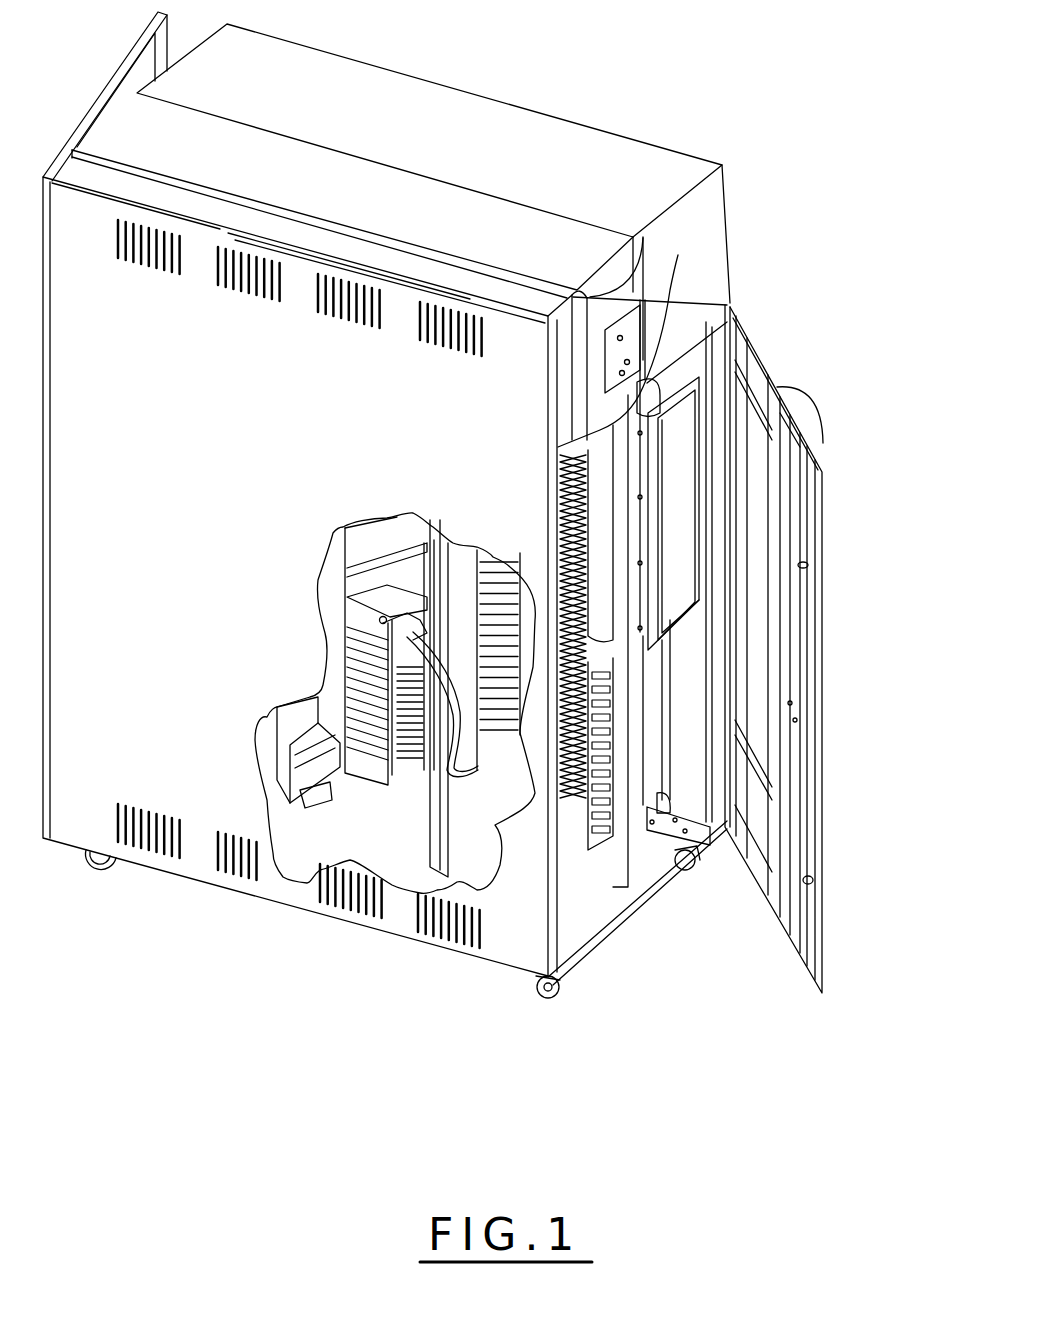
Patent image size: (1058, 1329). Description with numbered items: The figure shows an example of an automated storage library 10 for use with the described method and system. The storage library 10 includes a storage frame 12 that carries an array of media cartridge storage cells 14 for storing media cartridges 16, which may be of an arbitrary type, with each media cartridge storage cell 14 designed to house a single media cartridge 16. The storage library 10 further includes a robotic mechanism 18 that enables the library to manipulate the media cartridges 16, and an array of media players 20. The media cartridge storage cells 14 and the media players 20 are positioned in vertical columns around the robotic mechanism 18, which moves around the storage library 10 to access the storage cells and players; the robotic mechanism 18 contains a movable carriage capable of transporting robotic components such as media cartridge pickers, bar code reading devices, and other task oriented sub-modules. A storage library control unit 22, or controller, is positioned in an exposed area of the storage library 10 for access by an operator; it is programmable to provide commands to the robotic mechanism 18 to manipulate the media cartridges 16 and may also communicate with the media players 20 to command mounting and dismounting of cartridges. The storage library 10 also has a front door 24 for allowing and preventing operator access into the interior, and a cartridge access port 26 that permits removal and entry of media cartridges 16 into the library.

The automated storage library 10 is at (760, 85).
The storage frame 12 is at (367, 770).
The media cartridge storage cells 14 is at (353, 663).
The media cartridges 16 is at (380, 620).
The robotic mechanism 18 is at (490, 826).
The media players 20 is at (293, 790).
The storage library control unit 22 is at (622, 337).
The front door 24 is at (823, 692).
The cartridge access port 26 is at (663, 527).